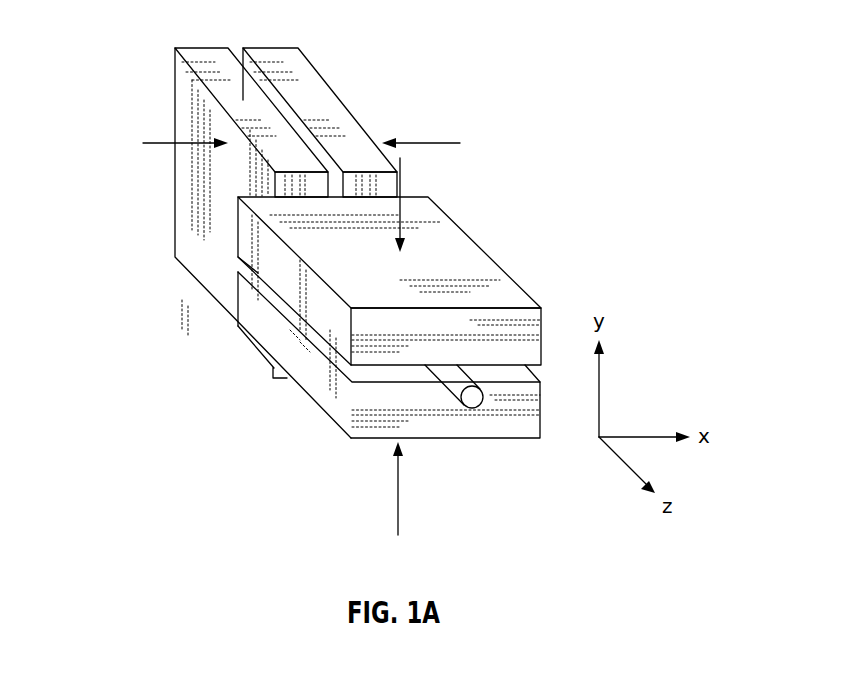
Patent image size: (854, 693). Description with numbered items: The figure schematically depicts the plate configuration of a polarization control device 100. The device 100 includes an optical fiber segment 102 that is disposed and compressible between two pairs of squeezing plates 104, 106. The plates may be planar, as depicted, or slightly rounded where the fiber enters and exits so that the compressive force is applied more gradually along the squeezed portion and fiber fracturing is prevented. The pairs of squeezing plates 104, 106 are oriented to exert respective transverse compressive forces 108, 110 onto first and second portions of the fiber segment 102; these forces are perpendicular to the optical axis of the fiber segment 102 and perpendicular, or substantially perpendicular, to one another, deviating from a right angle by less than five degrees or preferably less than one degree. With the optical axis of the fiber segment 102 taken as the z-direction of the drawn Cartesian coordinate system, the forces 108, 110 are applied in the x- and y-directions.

The polarization control device 100 is at (591, 24).
The optical fiber segment 102 is at (472, 397).
The first pair of squeezing plates 104 is at (158, 86).
The second pair of squeezing plates 106 is at (322, 413).
The transverse compressive force 108 is at (423, 143).
The transverse compressive force 110 is at (397, 503).